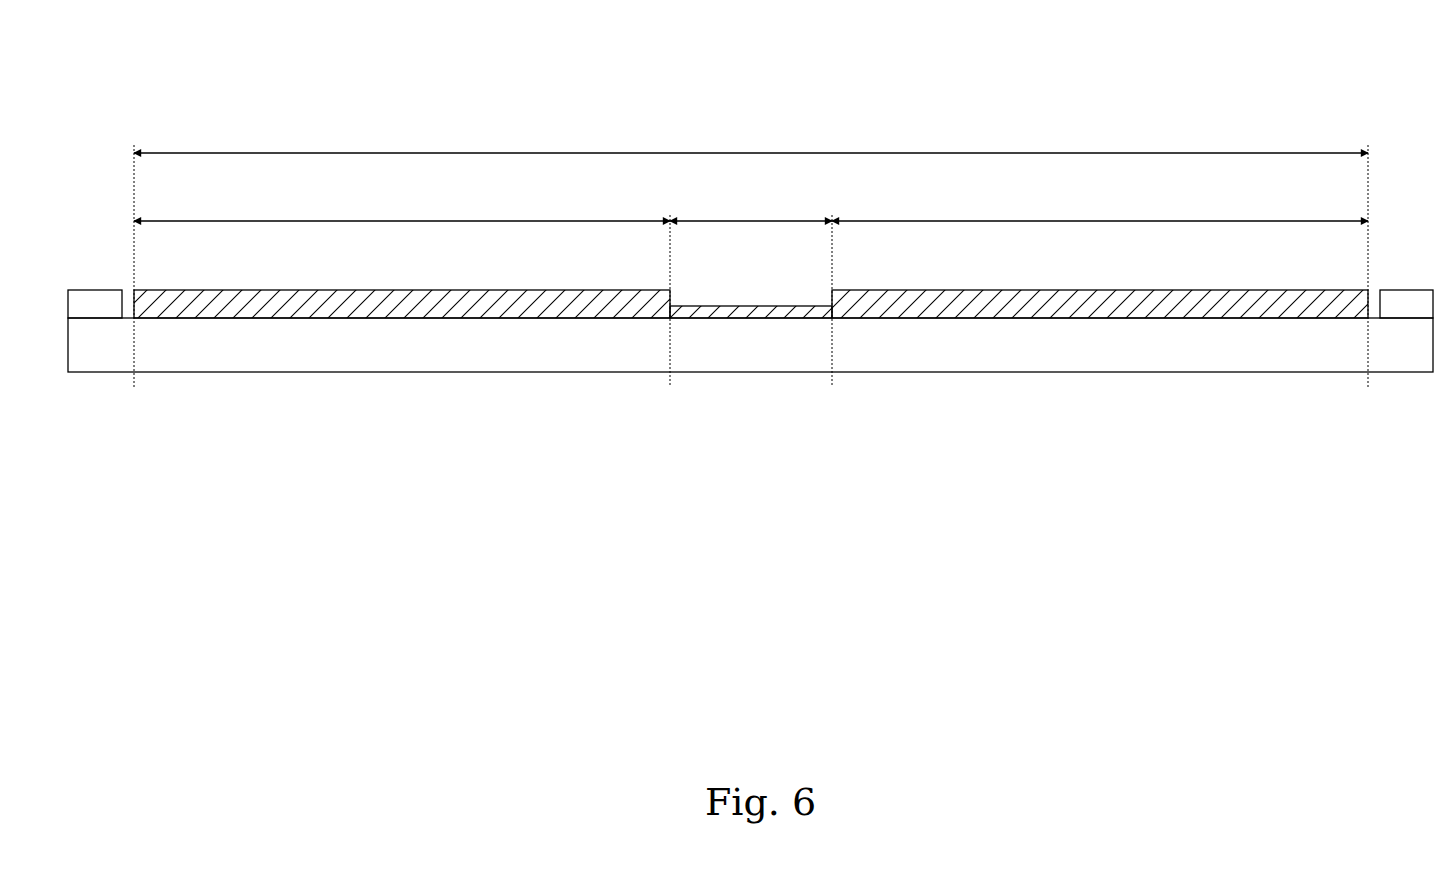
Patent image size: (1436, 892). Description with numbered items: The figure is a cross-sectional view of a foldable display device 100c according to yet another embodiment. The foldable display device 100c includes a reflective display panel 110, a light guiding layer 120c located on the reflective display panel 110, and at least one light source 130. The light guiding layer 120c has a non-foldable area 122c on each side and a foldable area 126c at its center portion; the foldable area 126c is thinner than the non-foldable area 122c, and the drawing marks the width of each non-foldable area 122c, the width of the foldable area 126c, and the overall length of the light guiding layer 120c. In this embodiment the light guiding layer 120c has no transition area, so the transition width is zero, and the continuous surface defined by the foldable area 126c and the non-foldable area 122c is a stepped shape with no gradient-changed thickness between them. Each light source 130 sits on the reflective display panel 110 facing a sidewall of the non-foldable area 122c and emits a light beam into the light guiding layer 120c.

The foldable display device 100c is at (1432, 75).
The reflective display panel 110 is at (1195, 367).
The light source 130 is at (99, 298).
The light guiding layer 120c is at (751, 411).
The non-foldable area 122c is at (551, 322).
The foldable area 126c is at (743, 326).